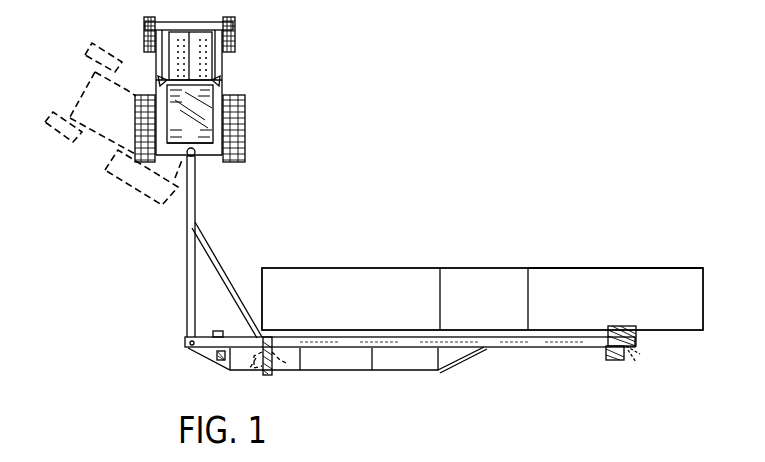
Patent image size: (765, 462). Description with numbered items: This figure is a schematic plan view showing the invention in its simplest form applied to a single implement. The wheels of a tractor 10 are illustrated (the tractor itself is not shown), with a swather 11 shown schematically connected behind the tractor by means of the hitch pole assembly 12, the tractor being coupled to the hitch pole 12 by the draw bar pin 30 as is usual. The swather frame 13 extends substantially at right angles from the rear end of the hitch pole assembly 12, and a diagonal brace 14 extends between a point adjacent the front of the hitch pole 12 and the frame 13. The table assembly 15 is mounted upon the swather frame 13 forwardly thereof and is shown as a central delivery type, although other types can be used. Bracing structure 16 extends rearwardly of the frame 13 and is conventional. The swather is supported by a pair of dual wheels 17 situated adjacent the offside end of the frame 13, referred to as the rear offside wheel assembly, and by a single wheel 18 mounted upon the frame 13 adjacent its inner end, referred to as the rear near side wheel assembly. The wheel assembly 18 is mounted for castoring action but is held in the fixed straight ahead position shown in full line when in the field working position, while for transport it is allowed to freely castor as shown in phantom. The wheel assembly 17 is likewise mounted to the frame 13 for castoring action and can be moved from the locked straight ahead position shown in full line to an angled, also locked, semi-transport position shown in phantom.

The wheels of a tractor 10 is at (227, 89).
The swather 11 is at (482, 262).
The hitch pole assembly 12 is at (196, 205).
The swather frame 13 is at (518, 347).
The diagonal brace 14 is at (215, 262).
The table assembly 15 is at (568, 280).
The bracing structure 16 is at (440, 371).
The rear offside wheel assembly 17 is at (643, 324).
The rear near side wheel assembly 18 is at (268, 344).
The draw bar pin 30 is at (196, 160).